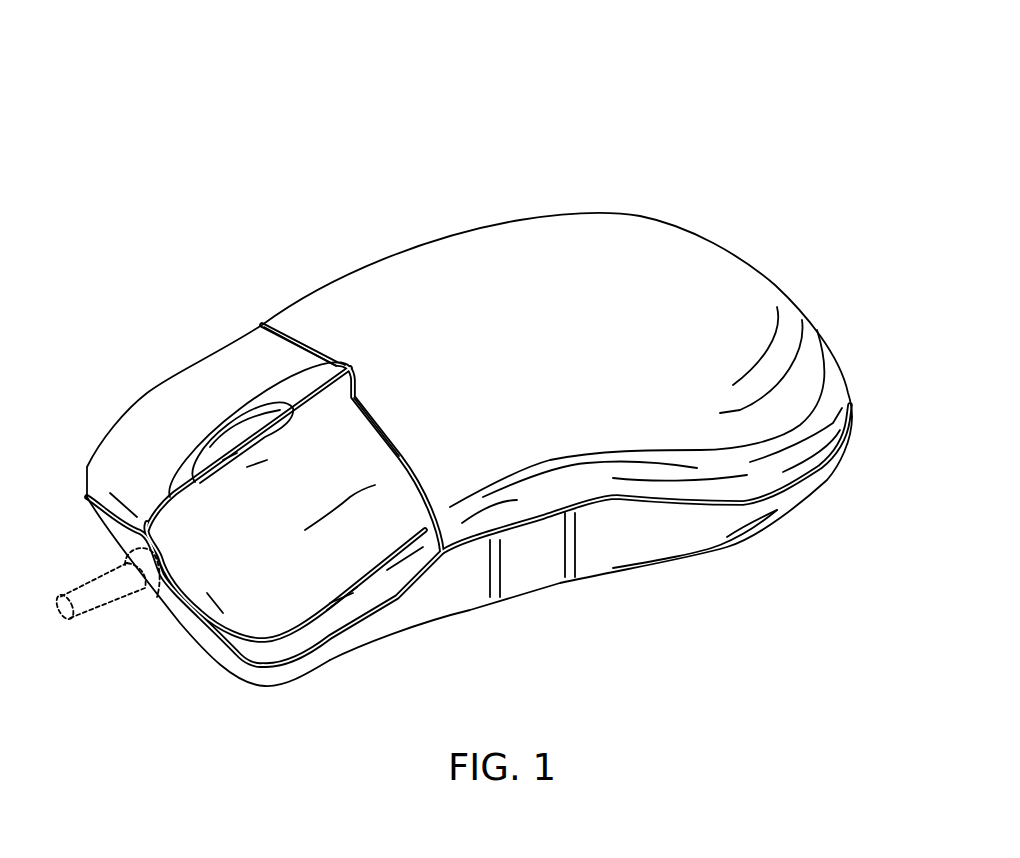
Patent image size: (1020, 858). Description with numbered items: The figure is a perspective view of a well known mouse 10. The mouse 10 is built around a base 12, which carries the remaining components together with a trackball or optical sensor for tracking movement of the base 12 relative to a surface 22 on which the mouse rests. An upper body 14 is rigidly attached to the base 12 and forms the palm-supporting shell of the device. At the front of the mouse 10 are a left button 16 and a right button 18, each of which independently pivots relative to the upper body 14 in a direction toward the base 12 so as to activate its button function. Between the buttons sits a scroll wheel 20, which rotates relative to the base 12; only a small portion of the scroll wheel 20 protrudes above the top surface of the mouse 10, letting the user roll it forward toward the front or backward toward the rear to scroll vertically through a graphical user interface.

The mouse 10 is at (514, 132).
The base 12 is at (597, 577).
The upper body 14 is at (725, 284).
The left button 16 is at (235, 555).
The right button 18 is at (125, 466).
The scroll wheel 20 is at (240, 433).
The surface 22 is at (442, 672).